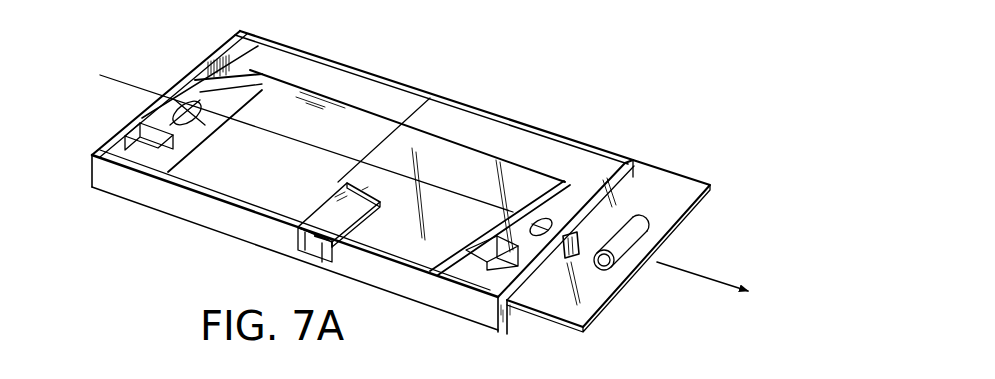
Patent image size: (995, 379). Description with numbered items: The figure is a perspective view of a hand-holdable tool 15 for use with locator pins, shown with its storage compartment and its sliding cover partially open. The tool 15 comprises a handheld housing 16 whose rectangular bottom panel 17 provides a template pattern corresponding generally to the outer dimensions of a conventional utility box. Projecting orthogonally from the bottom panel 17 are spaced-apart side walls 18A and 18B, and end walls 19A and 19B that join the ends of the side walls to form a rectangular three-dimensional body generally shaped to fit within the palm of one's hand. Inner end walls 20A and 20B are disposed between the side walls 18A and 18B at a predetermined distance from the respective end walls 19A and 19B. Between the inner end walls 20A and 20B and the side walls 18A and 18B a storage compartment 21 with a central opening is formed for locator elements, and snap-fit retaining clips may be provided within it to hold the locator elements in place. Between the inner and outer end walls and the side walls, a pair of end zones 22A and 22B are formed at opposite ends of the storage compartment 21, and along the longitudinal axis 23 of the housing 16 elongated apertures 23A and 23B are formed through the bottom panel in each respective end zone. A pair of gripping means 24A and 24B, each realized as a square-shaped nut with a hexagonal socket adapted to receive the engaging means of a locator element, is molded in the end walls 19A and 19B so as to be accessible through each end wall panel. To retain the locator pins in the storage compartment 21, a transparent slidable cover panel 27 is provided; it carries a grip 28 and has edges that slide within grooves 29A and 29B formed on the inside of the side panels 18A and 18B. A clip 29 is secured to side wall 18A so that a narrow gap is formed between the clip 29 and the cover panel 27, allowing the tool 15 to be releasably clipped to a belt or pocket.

The hand-holdable tool 15 is at (610, 66).
The handheld housing 16 is at (297, 265).
The bottom panel 17 is at (348, 154).
The side wall 18A is at (150, 200).
The side wall 18B is at (437, 82).
The end wall 19A is at (516, 318).
The end wall 19B is at (109, 156).
The inner end wall 20A is at (570, 210).
The inner end wall 20B is at (367, 80).
The storage compartment 21 is at (240, 186).
The end zone 22A is at (540, 206).
The end zone 22B is at (152, 110).
The longitudinal axis 23 is at (712, 275).
The elongated aperture 23A is at (576, 230).
The elongated aperture 23B is at (150, 185).
The gripping means 24A is at (620, 185).
The gripping means 24B is at (190, 82).
The slidable cover panel 27 is at (592, 306).
The grip 28 is at (648, 224).
The clip 29 is at (310, 250).
The groove 29A is at (368, 212).
The groove 29B is at (412, 90).